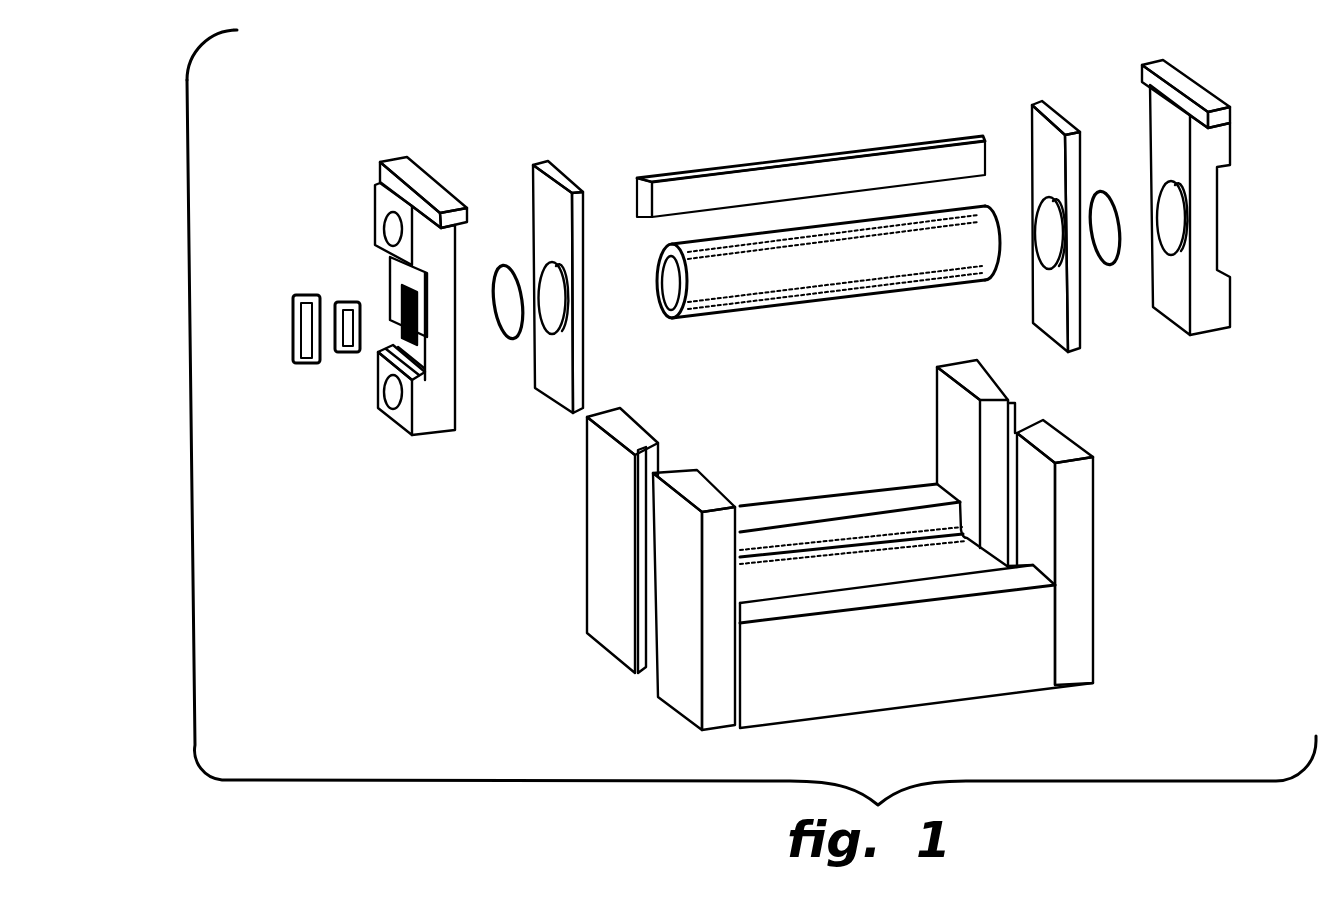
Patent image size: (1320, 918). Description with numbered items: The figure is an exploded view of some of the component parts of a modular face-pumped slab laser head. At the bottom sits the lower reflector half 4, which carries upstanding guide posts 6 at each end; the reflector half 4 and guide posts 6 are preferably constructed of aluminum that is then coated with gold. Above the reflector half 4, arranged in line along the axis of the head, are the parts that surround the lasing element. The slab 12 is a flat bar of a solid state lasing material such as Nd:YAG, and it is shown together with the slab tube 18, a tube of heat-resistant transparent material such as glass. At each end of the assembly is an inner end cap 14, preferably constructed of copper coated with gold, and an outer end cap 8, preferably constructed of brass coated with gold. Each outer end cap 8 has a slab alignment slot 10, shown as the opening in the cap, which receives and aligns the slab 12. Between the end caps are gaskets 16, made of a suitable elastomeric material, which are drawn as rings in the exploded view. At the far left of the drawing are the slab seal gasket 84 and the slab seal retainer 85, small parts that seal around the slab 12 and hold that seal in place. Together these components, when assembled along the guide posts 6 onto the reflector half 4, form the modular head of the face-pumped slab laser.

The lower reflector half 4 is at (636, 681).
The guide posts 6 is at (597, 518).
The outer end cap 8 is at (1203, 336).
The slab alignment slot 10 is at (1155, 231).
The slab 12 is at (880, 148).
The inner end cap 14 is at (586, 367).
The gaskets 16 is at (508, 265).
The slab tube 18 is at (862, 272).
The slab seal gasket 84 is at (355, 298).
The slab seal retainer 85 is at (303, 363).